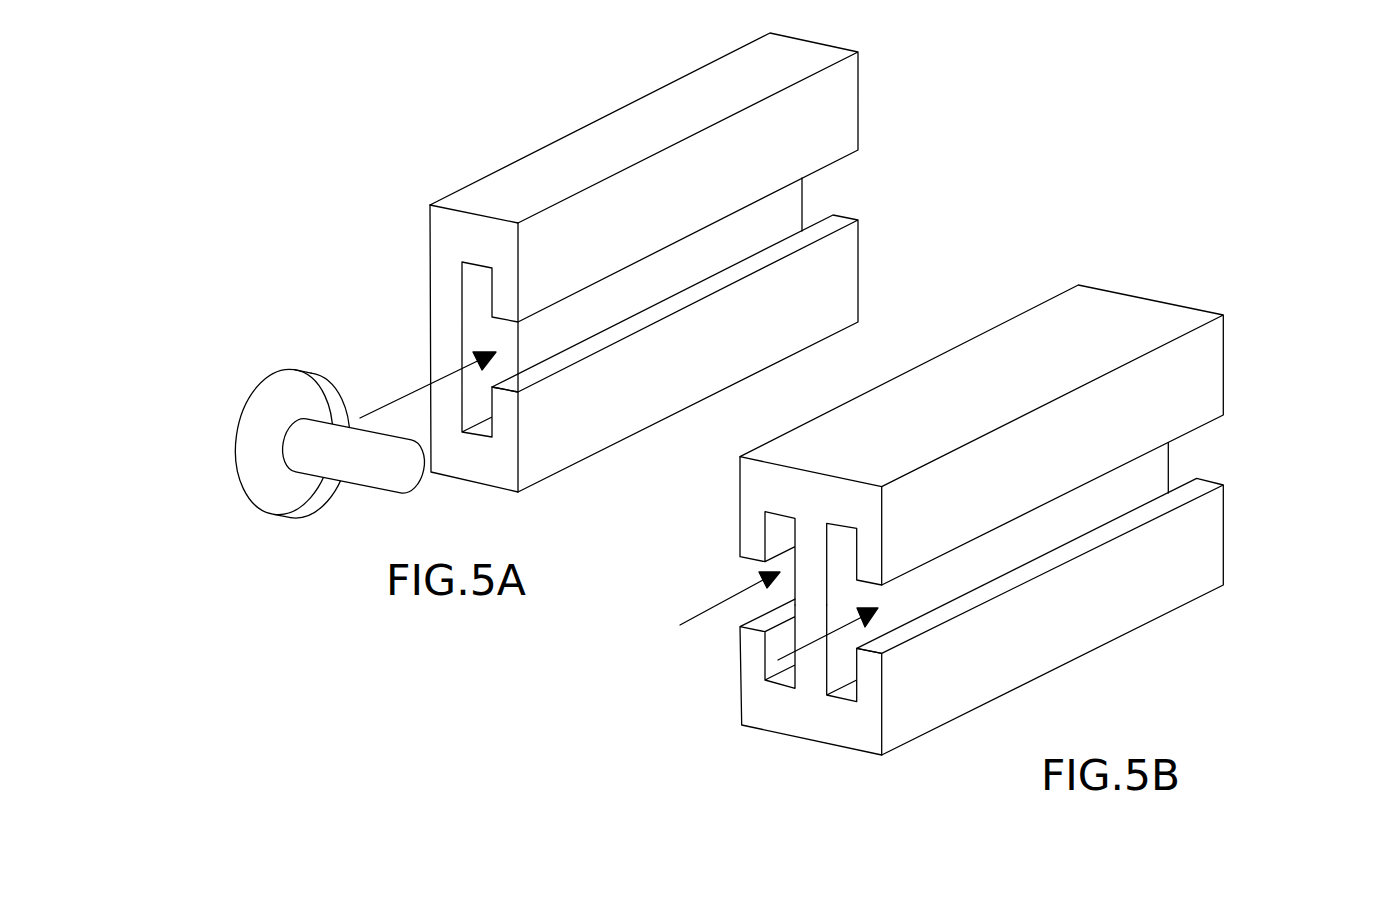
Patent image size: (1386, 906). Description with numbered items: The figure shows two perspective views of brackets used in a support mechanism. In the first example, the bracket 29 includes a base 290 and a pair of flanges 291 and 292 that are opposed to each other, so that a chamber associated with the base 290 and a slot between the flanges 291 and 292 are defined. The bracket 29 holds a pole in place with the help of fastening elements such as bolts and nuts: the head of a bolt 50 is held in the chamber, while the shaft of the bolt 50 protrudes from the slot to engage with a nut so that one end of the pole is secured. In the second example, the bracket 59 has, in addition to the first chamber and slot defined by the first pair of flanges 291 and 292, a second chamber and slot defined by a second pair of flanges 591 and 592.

In FIG. 5A, the flange 291 is at (838, 110).
In FIG. 5B, the flange 291 is at (1203, 372).
In FIG. 5A, the flange 292 is at (840, 271).
In FIG. 5B, the flange 292 is at (1205, 535).
In FIG. 5A, the bracket 29 is at (808, 203).
In FIG. 5A, the base 290 is at (428, 297).
In FIG. 5A, the bolt 50 is at (268, 380).
In FIG. 5B, the bracket 59 is at (1174, 467).
In FIG. 5B, the flange 591 is at (740, 517).
In FIG. 5B, the flange 592 is at (740, 686).